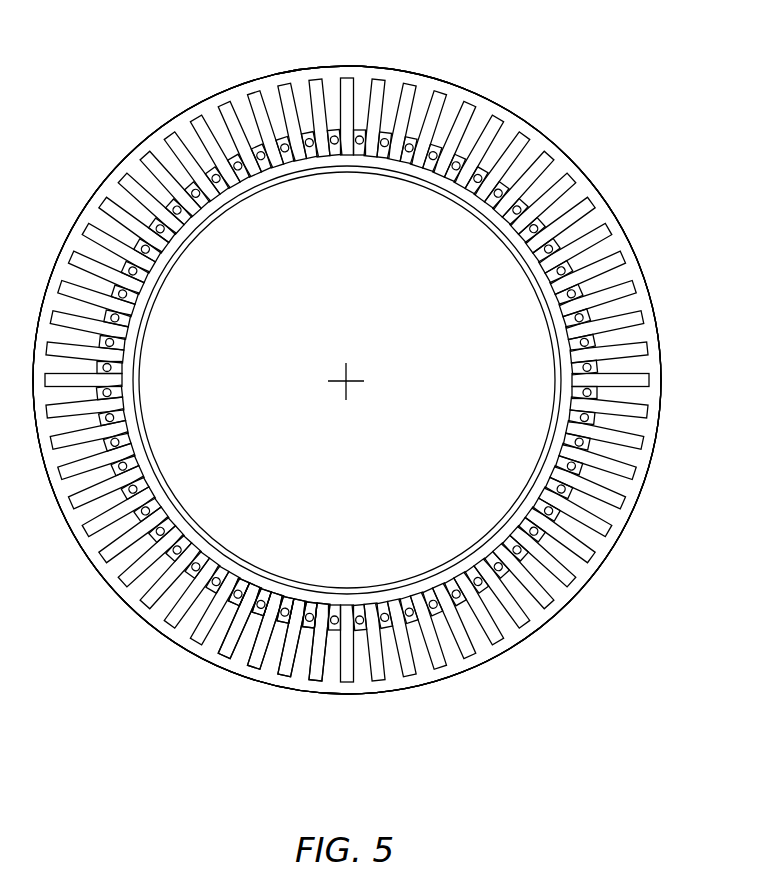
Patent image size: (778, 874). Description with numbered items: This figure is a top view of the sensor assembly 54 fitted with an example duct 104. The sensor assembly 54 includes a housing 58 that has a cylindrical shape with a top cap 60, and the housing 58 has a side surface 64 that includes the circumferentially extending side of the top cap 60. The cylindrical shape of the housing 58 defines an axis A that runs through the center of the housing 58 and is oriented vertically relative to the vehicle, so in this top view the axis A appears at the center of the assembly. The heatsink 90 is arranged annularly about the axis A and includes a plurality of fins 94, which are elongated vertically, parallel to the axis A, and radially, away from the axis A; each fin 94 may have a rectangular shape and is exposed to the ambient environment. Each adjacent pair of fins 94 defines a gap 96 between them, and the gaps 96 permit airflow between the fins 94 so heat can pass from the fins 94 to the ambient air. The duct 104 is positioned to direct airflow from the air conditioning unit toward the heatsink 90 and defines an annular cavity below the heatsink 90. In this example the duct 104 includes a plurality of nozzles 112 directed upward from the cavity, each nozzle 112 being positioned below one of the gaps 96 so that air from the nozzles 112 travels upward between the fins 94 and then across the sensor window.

The sensor assembly 54 is at (578, 87).
The housing 58 is at (598, 203).
The top cap 60 is at (527, 490).
The side surface 64 is at (576, 587).
The heatsink 90 is at (166, 500).
The fins 94 is at (379, 79).
The gaps 96 is at (385, 144).
The duct 104 is at (150, 625).
The nozzles 112 is at (413, 614).
The axis A is at (350, 377).